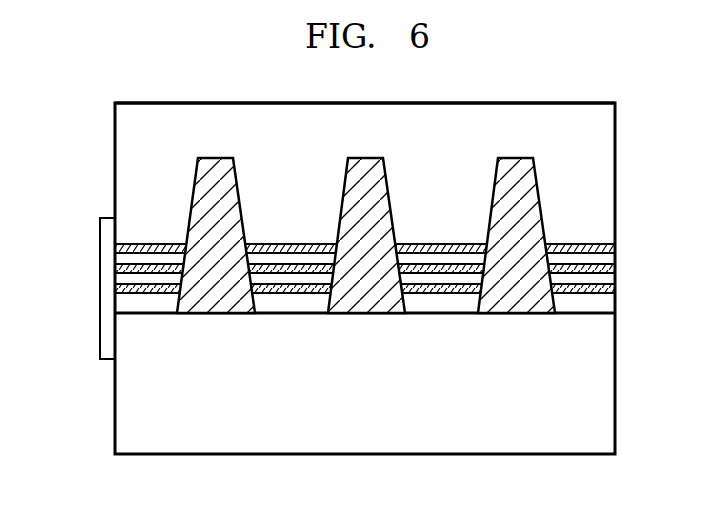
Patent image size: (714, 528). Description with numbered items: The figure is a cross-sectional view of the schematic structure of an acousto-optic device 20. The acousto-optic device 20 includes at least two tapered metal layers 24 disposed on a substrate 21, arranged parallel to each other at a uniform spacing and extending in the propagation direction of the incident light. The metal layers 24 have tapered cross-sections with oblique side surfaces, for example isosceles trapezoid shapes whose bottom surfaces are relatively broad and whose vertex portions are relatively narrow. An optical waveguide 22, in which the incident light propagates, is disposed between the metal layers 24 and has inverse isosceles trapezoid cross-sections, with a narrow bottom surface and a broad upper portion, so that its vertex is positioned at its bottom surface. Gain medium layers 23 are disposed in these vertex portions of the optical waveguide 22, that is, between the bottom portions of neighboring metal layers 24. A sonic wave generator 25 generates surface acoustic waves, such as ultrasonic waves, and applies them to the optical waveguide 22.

The acousto-optic device 20 is at (386, 504).
The substrate 21 is at (615, 383).
The optical waveguide 22 is at (615, 148).
The gain medium layers 23 is at (627, 245).
The metal layers 24 is at (532, 198).
The sonic wave generator 25 is at (100, 288).